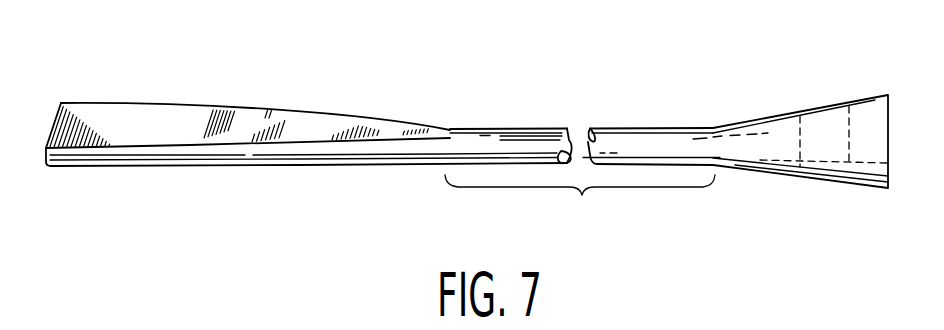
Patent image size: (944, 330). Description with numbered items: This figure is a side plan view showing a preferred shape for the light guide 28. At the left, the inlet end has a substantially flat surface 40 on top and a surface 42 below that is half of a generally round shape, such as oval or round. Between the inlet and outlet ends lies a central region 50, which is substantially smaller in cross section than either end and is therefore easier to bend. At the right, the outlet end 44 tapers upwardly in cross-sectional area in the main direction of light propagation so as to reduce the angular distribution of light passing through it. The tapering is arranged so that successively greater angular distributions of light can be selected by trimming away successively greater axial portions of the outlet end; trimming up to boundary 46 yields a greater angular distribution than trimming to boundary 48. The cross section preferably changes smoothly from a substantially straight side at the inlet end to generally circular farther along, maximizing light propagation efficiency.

The light guide 28 is at (514, 119).
The substantially flat surface 40 is at (162, 115).
The surface 42 is at (190, 160).
The handle wedge 44 is at (827, 192).
The boundary 46 is at (800, 153).
The boundary 48 is at (850, 141).
The central region 50 is at (580, 204).